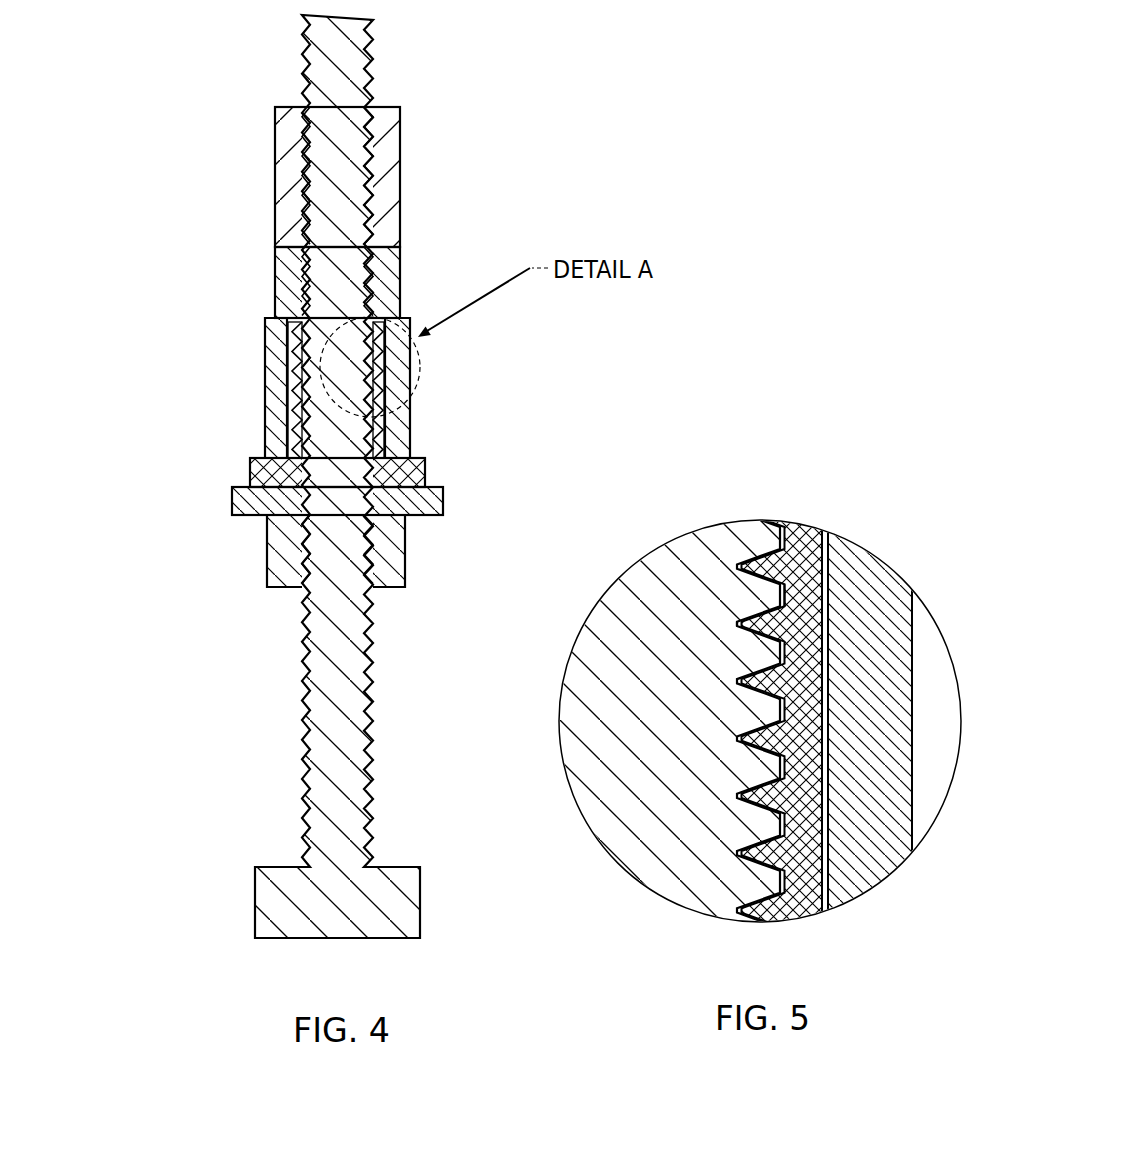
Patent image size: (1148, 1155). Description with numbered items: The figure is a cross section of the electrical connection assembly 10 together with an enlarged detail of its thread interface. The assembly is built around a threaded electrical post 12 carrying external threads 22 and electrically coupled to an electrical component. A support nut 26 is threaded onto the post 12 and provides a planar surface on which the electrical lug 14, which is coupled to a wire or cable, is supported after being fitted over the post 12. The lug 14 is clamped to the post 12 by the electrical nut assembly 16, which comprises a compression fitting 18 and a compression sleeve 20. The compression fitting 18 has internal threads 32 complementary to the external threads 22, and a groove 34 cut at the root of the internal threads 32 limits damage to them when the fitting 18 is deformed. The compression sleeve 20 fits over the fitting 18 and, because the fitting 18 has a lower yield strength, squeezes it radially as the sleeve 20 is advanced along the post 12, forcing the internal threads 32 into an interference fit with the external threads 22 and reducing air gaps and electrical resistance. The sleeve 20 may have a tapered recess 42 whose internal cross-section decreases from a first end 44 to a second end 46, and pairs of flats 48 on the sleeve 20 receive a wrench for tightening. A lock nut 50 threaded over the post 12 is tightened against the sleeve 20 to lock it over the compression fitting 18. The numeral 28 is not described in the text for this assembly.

In FIG. 4, the electrical connection assembly 10 is at (215, 287).
In FIG. 4, the threaded electrical post 12 is at (328, 792).
In FIG. 5, the threaded electrical post 12 is at (620, 755).
In FIG. 4, the electrical lug 14 is at (240, 503).
In FIG. 4, the electrical nut assembly 16 is at (479, 392).
In FIG. 4, the compression fitting 18 is at (250, 469).
In FIG. 5, the compression fitting 18 is at (790, 527).
In FIG. 4, the compression sleeve 20 is at (275, 368).
In FIG. 5, the compression sleeve 20 is at (864, 868).
In FIG. 5, the external threads 22 is at (750, 530).
In FIG. 4, the support nut 26 is at (285, 560).
In FIG. 4, the lower nut portion 28 is at (403, 538).
In FIG. 5, the internal threads 32 is at (749, 628).
In FIG. 5, the groove 34 is at (782, 597).
In FIG. 4, the tapered recess 42 is at (383, 432).
In FIG. 4, the first end 44 is at (241, 440).
In FIG. 4, the second end 46 is at (420, 297).
In FIG. 4, the pairs of flats 48 is at (272, 287).
In FIG. 4, the lock nut 50 is at (400, 150).